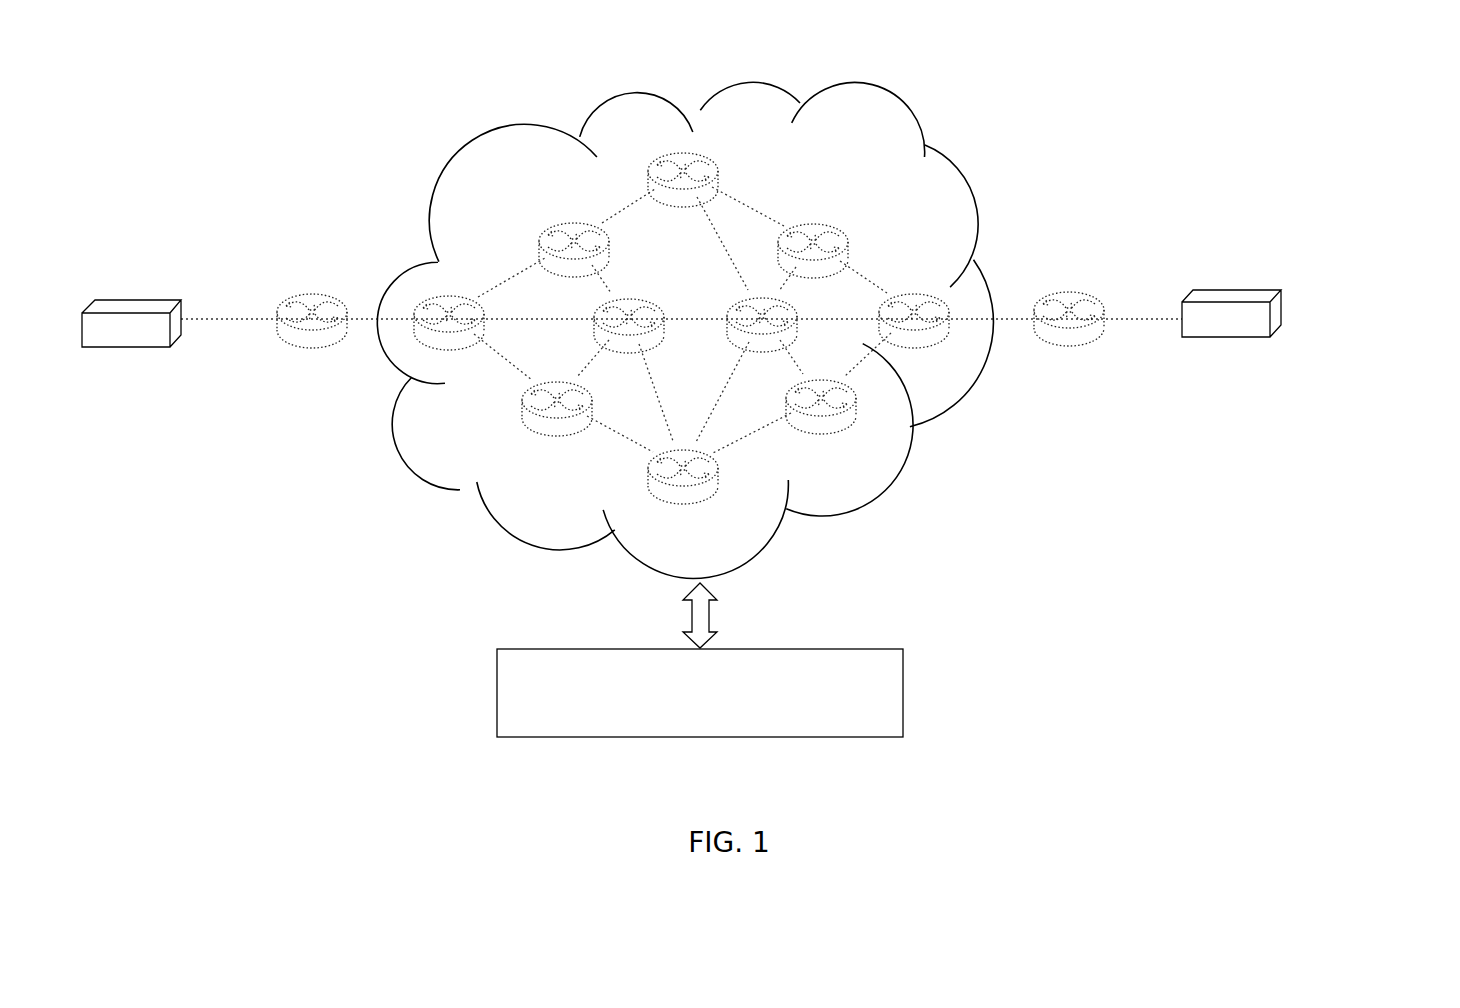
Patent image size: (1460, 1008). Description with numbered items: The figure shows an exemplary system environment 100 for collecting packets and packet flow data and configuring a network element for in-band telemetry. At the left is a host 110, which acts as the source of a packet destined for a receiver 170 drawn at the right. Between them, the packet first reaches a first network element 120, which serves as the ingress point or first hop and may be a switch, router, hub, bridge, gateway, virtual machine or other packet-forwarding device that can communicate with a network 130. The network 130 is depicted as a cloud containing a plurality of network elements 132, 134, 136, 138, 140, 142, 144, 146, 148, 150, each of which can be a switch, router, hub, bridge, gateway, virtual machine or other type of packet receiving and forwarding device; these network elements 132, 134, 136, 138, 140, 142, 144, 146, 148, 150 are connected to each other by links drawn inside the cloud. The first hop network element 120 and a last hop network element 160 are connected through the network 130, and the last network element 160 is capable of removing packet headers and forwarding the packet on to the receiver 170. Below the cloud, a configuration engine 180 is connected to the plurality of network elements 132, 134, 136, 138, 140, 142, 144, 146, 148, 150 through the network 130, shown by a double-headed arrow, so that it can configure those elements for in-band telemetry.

The system environment 100 is at (1355, 122).
The host 110 is at (108, 300).
The first network element 120 is at (305, 292).
The network 130 is at (933, 148).
The network element 132 is at (455, 297).
The network element 134 is at (630, 290).
The network element 136 is at (730, 338).
The network element 138 is at (897, 292).
The network element 140 is at (572, 224).
The network element 142 is at (523, 413).
The network element 144 is at (697, 507).
The network element 146 is at (843, 433).
The network element 148 is at (710, 160).
The network element 150 is at (828, 224).
The last network element 160 is at (1073, 292).
The receiver 170 is at (1268, 293).
The configuration engine 180 is at (903, 650).